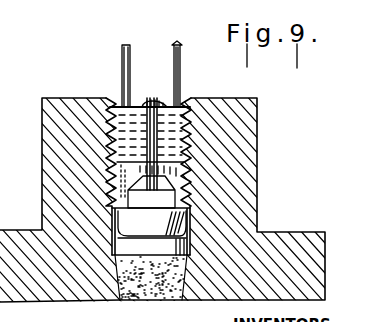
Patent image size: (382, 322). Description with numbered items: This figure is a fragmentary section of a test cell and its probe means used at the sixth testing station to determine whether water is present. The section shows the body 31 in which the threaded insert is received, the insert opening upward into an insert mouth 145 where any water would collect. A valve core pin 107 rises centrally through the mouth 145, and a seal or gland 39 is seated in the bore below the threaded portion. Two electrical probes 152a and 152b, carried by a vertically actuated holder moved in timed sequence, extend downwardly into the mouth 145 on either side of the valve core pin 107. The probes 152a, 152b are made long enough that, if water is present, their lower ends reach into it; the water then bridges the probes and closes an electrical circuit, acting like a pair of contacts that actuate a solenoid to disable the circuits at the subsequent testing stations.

The block body 31 is at (238, 228).
The insert mouth 145 is at (112, 93).
The valve core pin 107 is at (148, 98).
The electrical probe 152a is at (122, 60).
The electrical probe 152b is at (182, 75).
The gland seal 39 is at (125, 217).